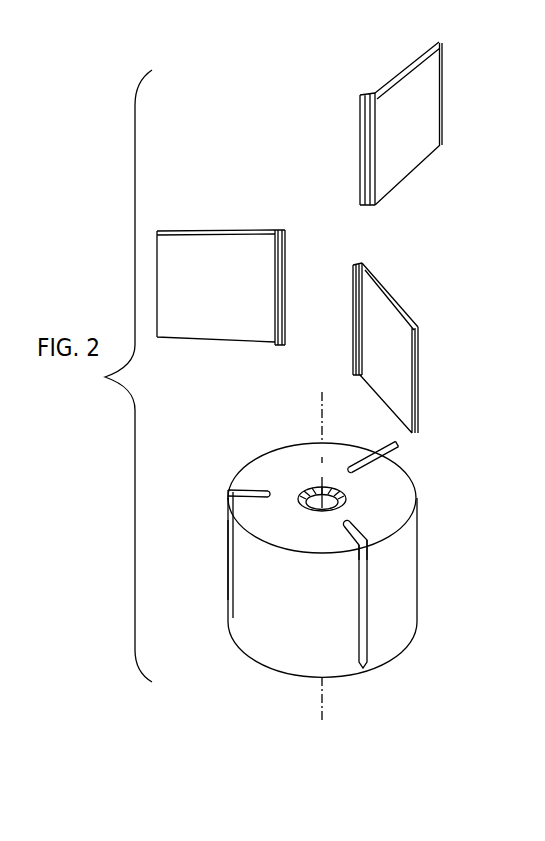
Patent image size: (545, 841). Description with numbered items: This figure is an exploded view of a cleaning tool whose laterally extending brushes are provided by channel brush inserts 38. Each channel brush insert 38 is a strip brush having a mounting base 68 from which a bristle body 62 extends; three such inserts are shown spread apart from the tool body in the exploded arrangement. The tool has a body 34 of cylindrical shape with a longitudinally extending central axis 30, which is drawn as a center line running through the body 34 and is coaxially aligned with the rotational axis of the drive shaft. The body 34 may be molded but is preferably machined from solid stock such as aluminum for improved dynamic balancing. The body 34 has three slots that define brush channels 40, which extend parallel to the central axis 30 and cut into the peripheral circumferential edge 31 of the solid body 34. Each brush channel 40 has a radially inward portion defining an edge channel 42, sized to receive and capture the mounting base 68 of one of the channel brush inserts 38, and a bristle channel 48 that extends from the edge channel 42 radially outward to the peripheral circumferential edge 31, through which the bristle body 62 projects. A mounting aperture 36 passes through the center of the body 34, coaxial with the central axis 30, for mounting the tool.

The central axis 30 is at (320, 426).
The peripheral circumferential edge 31 is at (410, 616).
The body 34 is at (246, 593).
The mounting aperture 36 is at (346, 496).
The channel brush insert 38 is at (326, 237).
The brush channel 40 is at (235, 485).
The edge channel 42 is at (268, 489).
The bristle channel 48 is at (233, 500).
The bristle body 62 is at (410, 155).
The mounting base 68 is at (360, 134).